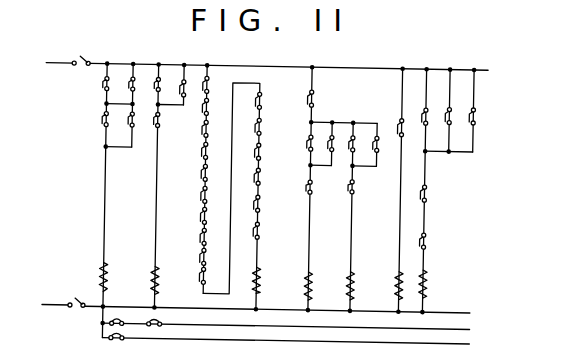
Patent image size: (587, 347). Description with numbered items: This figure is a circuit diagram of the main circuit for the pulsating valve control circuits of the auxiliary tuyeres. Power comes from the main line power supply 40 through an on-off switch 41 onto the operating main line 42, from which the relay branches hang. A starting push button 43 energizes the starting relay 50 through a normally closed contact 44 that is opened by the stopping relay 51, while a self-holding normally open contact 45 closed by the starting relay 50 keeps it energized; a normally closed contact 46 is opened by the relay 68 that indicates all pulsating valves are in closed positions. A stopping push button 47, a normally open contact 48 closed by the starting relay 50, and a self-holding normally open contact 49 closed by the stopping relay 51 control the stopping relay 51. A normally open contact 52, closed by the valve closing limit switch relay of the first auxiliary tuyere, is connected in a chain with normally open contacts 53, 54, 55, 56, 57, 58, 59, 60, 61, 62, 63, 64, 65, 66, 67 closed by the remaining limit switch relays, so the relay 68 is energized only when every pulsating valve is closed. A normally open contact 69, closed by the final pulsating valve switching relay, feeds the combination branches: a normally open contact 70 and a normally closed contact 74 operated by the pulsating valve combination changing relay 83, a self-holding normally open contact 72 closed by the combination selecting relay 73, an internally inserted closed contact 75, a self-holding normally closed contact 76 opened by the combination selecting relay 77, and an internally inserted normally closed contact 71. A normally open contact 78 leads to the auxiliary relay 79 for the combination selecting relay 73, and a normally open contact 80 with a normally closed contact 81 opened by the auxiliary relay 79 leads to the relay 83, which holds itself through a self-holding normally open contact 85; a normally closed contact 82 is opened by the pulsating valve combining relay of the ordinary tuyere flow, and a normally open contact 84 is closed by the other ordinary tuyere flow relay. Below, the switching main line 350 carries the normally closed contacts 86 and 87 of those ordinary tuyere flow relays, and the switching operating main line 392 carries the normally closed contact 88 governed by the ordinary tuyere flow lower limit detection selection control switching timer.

The main line power supply 40 is at (55, 69).
The on-off switch 41 is at (84, 59).
The operating main line 42 is at (117, 66).
The starting push button 43 is at (99, 92).
The normally closed contact 44 is at (101, 122).
The self-holding normally open contact 45 is at (128, 92).
The normally closed contact 46 is at (128, 122).
The stopping push button 47 is at (153, 92).
The normally open contact 48 is at (154, 122).
The self-holding normally open contact 49 is at (178, 92).
The starting relay 50 is at (110, 279).
The stopping relay 51 is at (153, 287).
The normally open contact 52 is at (203, 88).
The normally open contact 53 is at (202, 109).
The normally open contact 54 is at (202, 130).
The normally open contact 55 is at (202, 151).
The normally open contact 56 is at (202, 176).
The normally open contact 57 is at (202, 198).
The normally open contact 58 is at (202, 221).
The normally open contact 59 is at (202, 242).
The normally open contact 60 is at (202, 263).
The normally open contact 61 is at (202, 285).
The normally open contact 62 is at (256, 103).
The normally open contact 63 is at (256, 128).
The normally open contact 64 is at (256, 152).
The normally open contact 65 is at (256, 179).
The normally open contact 66 is at (256, 209).
The normally open contact 67 is at (256, 238).
The relay for indicating all pulsating valves are in closed positions 68 is at (255, 284).
The normally open contact 69 is at (307, 100).
The normally open contact 70 is at (306, 143).
The internally inserted normally closed contact 71 is at (307, 190).
The self-holding normally open contact 72 is at (329, 142).
The combination selecting relay 73 is at (307, 286).
The normally closed contact 74 is at (350, 147).
The internally inserted closed contact 75 is at (349, 192).
The self-holding normally closed contact 76 is at (373, 148).
The combination selecting relay 77 is at (348, 286).
The normally open contact 78 is at (399, 129).
The auxiliary relay 79 is at (397, 288).
The normally open contact 80 is at (420, 115).
The normally closed contact 81 is at (421, 191).
The normally closed contact 82 is at (421, 239).
The pulsating valve combination changing relay 83 is at (427, 289).
The normally open contact 84 is at (445, 116).
The self-holding normally open contact 85 is at (468, 116).
The normally closed contact 86 is at (122, 326).
The normally closed contact 87 is at (159, 326).
The normally closed contact 88 is at (122, 342).
The switching main line 350 is at (306, 326).
The switching operating main line 392 is at (307, 344).